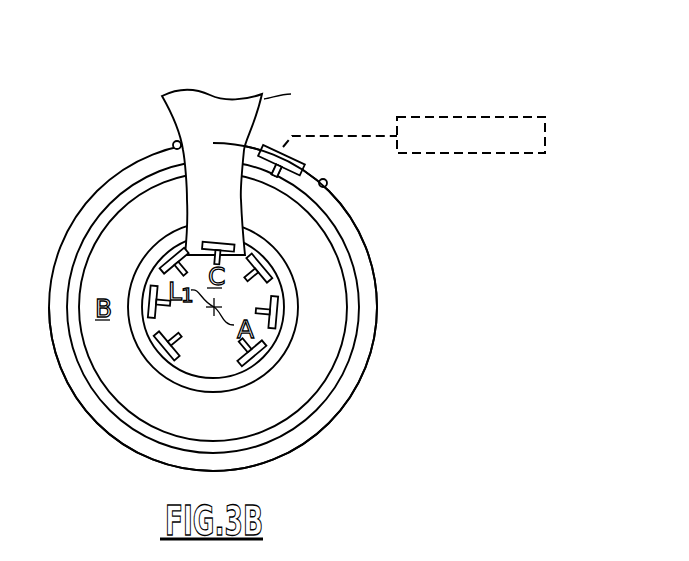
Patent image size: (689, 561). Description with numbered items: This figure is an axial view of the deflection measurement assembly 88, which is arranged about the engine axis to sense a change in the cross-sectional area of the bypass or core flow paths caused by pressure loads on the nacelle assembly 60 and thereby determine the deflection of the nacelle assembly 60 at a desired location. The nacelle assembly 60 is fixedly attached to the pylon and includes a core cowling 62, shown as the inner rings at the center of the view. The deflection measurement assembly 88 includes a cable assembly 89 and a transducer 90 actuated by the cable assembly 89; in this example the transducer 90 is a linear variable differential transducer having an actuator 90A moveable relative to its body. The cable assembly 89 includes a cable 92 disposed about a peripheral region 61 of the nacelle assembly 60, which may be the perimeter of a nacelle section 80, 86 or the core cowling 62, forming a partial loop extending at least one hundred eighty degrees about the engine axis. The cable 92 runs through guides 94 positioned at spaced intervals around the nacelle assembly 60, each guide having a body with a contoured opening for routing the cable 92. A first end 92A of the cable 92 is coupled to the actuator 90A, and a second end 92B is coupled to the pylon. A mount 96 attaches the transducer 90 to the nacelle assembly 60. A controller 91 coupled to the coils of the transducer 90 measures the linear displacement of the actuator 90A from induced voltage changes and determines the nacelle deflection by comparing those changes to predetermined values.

The nacelle assembly 60 is at (92, 148).
The peripheral region 61 is at (88, 232).
The core cowling 62 is at (300, 307).
The second nacelle section 80 is at (271, 307).
The third nacelle section 86 is at (358, 268).
The deflection measurement assembly 88 is at (287, 248).
The cable assembly 89 is at (392, 236).
The transducer 90 is at (278, 143).
The actuator 90A is at (324, 180).
The controller 91 is at (460, 117).
The cable 92 is at (363, 230).
The first end of cable 92A is at (328, 183).
The second end of cable 92B is at (156, 148).
The guides 94 is at (383, 322).
The mount 96 is at (292, 183).